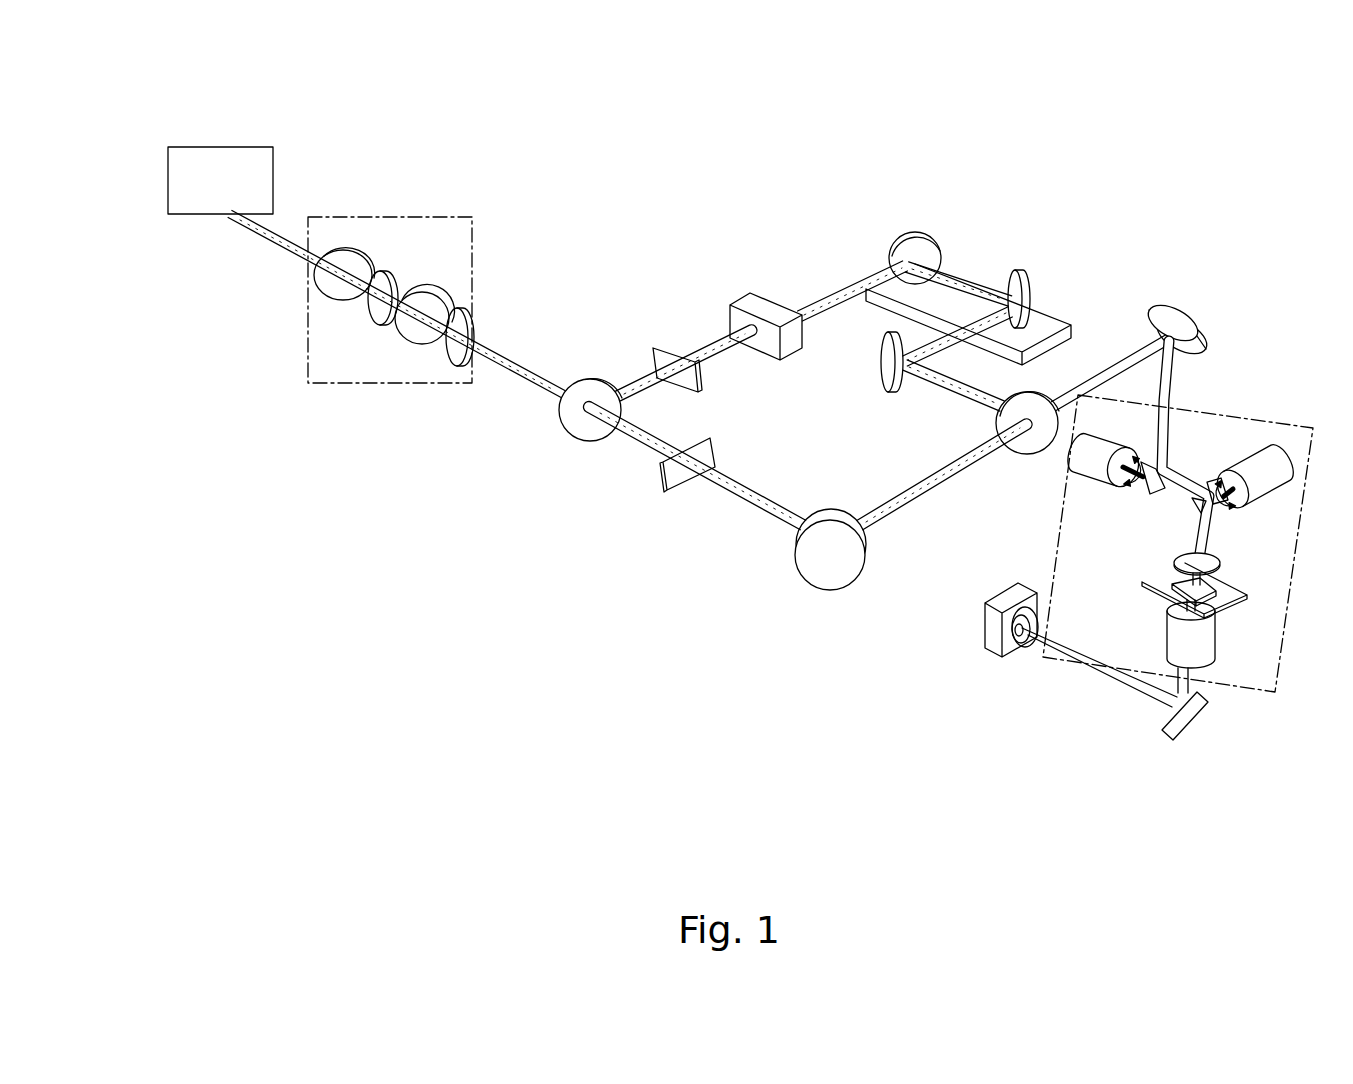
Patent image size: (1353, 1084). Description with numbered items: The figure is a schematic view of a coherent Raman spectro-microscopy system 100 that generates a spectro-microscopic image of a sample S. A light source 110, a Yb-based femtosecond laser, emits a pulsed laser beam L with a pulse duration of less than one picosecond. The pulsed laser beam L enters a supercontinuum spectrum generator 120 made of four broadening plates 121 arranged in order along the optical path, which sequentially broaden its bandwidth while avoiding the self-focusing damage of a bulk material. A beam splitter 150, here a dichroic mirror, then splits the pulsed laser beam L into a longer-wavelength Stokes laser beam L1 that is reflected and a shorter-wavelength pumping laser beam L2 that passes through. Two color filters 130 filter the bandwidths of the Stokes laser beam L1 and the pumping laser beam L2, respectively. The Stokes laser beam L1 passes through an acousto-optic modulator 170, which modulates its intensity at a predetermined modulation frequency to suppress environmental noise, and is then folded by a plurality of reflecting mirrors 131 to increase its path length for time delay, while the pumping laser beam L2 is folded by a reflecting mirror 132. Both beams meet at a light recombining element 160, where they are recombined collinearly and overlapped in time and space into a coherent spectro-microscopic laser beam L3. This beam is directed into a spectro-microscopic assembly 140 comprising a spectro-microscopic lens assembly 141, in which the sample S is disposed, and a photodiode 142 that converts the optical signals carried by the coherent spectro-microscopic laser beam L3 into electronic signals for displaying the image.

The coherent Raman spectro-microscopy system 100 is at (113, 78).
The light source 110 is at (220, 147).
The supercontinuum spectrum generator 120 is at (393, 291).
The broadening plates 121 is at (338, 303).
The color filter 130 is at (672, 372).
The reflecting mirrors 131 is at (890, 332).
The reflecting mirror 132 is at (837, 576).
The spectro-microscopic assembly 140 is at (1155, 644).
The spectro-microscopic lens assembly 141 is at (1263, 692).
The photodiode 142 is at (1012, 658).
The beam splitter 150 is at (582, 433).
The light recombining element 160 is at (1048, 394).
The acousto-optic modulator 170 is at (767, 303).
The pulsed laser beam L is at (282, 237).
The Stokes laser beam L1 is at (647, 380).
The pumping laser beam L2 is at (645, 441).
The coherent spectro-microscopic laser beam L3 is at (1101, 382).
The sample S is at (1245, 595).